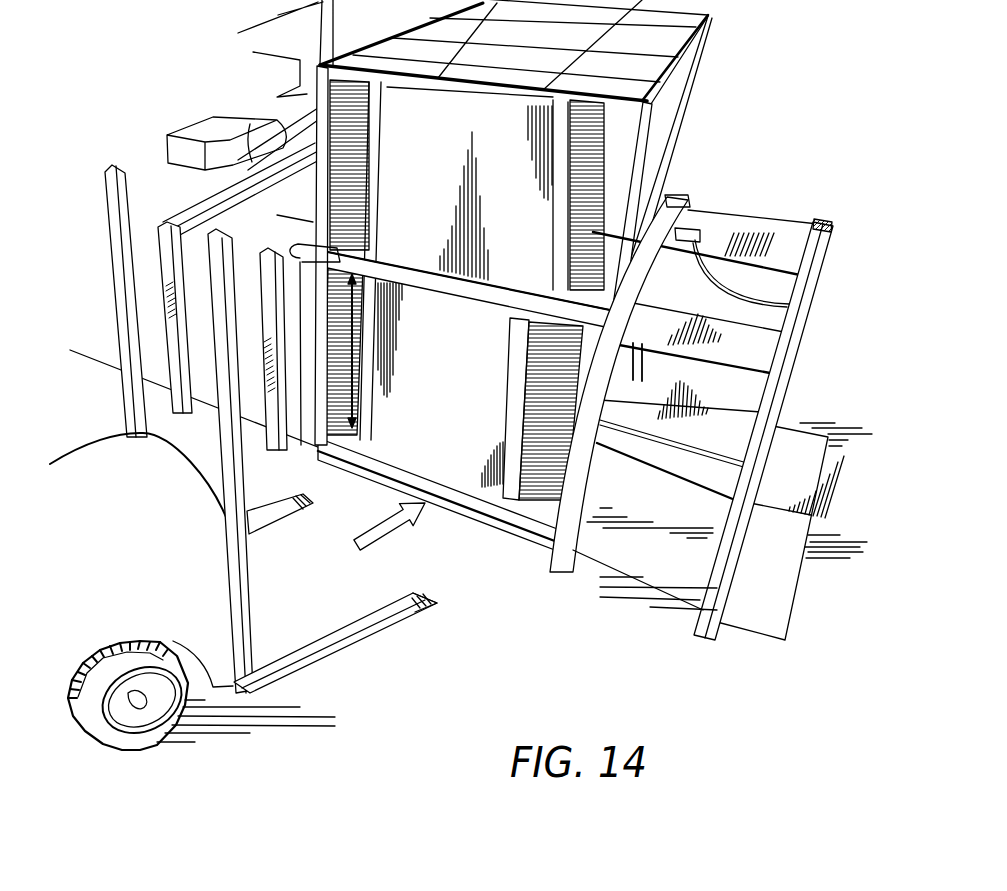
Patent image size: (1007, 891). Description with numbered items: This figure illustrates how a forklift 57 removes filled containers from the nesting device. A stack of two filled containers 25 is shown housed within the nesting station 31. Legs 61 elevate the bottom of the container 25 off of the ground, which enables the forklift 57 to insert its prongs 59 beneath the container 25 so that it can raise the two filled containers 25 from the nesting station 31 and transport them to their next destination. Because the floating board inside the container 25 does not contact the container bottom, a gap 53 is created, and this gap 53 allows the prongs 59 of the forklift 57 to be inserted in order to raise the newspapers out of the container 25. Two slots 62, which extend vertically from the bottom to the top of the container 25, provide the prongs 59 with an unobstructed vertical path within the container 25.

The container 25 is at (504, 295).
The slots 62 is at (582, 190).
The gap 53 is at (410, 275).
The legs 61 is at (300, 258).
The forklift 57 is at (107, 472).
The nesting station 31 is at (358, 484).
The prongs 59 is at (365, 628).